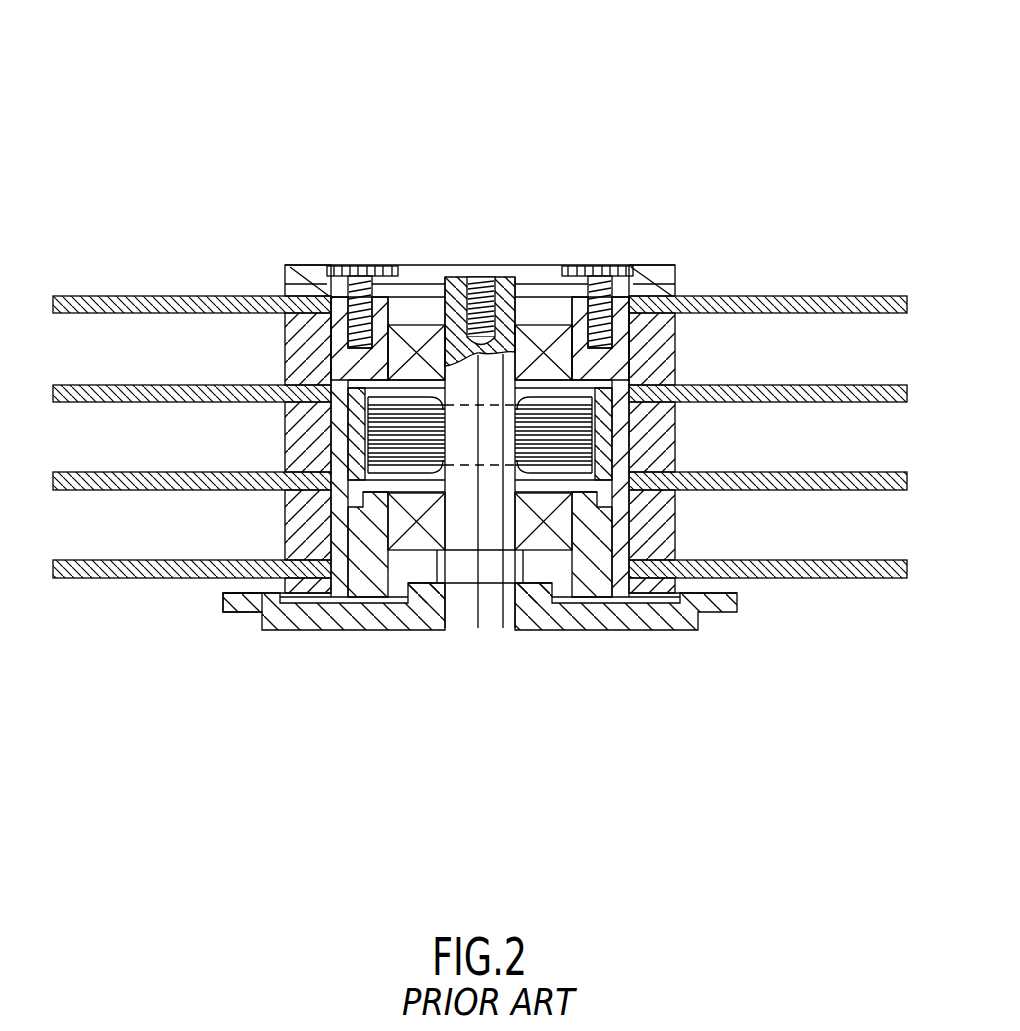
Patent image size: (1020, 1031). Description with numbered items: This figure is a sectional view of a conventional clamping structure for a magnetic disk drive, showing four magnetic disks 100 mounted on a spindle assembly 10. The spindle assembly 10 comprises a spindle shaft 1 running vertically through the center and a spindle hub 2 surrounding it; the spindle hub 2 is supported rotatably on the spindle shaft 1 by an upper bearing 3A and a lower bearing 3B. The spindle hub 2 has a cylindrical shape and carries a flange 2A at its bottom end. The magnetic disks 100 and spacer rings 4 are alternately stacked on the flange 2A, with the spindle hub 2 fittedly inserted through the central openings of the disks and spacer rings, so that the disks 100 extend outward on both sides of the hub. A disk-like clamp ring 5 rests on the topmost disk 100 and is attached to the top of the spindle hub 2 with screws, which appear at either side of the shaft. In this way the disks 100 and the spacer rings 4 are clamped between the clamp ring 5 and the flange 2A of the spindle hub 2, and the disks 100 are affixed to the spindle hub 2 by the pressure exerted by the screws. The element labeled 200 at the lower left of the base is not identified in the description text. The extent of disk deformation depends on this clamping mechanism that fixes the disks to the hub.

The spindle assembly 10 is at (508, 190).
The spindle shaft 1 is at (488, 622).
The spindle hub 2 is at (480, 641).
The flange 2A is at (640, 593).
The bearing 3A is at (407, 331).
The bearing 3B is at (417, 542).
The spacer ring 4 is at (285, 356).
The clamp ring 5 is at (648, 264).
The magnetic disk 100 is at (832, 295).
The base flange 200 is at (273, 616).